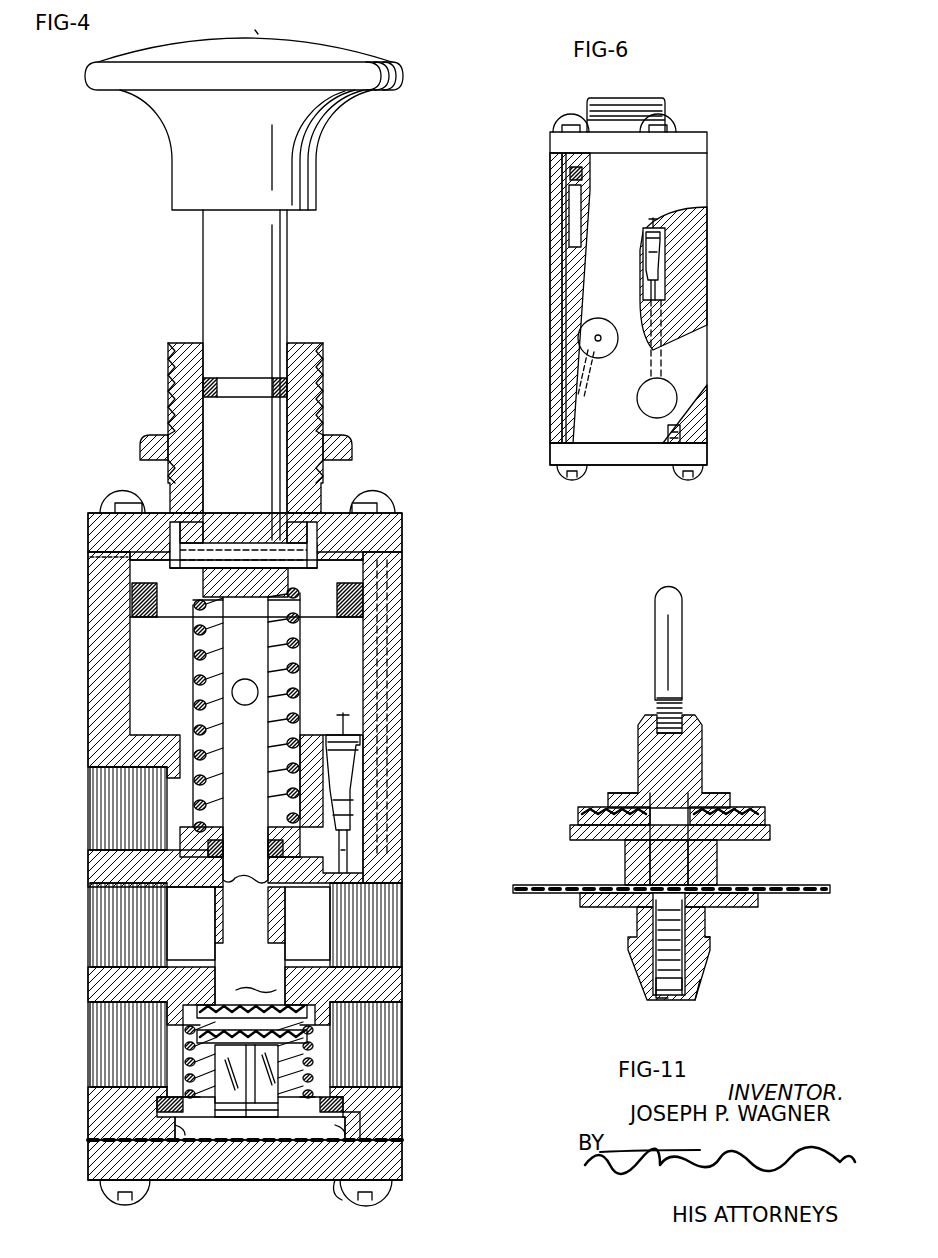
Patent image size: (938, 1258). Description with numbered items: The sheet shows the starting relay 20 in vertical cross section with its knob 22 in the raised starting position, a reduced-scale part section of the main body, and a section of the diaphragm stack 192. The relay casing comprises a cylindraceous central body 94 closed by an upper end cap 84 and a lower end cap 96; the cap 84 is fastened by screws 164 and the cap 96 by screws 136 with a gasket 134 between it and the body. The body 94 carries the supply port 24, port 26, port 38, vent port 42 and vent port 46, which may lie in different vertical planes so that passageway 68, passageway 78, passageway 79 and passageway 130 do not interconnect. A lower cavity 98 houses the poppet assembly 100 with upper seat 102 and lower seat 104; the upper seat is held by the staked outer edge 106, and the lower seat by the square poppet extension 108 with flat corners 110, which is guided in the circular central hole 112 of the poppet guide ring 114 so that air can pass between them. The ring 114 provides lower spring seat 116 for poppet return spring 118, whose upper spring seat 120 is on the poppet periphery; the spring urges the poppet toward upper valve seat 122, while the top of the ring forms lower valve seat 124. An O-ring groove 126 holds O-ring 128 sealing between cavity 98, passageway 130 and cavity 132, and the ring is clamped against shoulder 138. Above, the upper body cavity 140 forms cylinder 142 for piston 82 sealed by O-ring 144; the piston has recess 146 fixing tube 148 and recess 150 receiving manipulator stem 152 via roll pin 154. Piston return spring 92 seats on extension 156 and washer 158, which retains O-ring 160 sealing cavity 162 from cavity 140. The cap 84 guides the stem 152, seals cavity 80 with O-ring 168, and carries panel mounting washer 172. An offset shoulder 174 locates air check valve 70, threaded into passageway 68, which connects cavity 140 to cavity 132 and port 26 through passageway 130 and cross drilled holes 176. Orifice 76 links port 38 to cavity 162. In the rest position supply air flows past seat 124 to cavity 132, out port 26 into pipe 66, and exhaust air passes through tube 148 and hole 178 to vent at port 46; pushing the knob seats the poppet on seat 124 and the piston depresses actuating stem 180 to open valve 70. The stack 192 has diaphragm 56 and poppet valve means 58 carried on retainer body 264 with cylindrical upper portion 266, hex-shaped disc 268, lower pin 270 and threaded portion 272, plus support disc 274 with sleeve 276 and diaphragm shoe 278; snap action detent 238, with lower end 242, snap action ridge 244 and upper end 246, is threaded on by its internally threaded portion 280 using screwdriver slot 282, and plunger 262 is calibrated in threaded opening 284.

In FIG. 4, the relay 20 is at (80, 379).
In FIG. 6, the relay 20 is at (743, 210).
In FIG. 4, the knob 22 is at (318, 178).
In FIG. 4, the supply port 24 is at (100, 1062).
In FIG. 4, the port 26 is at (380, 1050).
In FIG. 6, the port 26 is at (668, 388).
In FIG. 4, the port 38 is at (365, 925).
In FIG. 6, the port 38 is at (590, 325).
In FIG. 4, the vent port 42 is at (100, 928).
In FIG. 4, the vent port 46 is at (100, 795).
In FIG. 11, the diaphragm 56 is at (782, 885).
In FIG. 11, the poppet valve means 58 is at (740, 807).
In FIG. 4, the pipe 66 is at (95, 557).
In FIG. 4, the passageway 68 is at (350, 875).
In FIG. 6, the passageway 68 is at (652, 325).
In FIG. 4, the air check valve 70 is at (345, 822).
In FIG. 6, the air check valve 70 is at (655, 290).
In FIG. 4, the orifice 76 is at (290, 915).
In FIG. 6, the orifice 76 is at (598, 335).
In FIG. 4, the passageway 78 is at (400, 960).
In FIG. 6, the passageway 78 is at (573, 392).
In FIG. 4, the passageway 79 is at (385, 786).
In FIG. 6, the passageway 79 is at (562, 345).
In FIG. 4, the cavity 80 is at (172, 533).
In FIG. 6, the cavity 80 is at (575, 160).
In FIG. 4, the piston 82 is at (340, 645).
In FIG. 4, the end cap 84 is at (370, 520).
In FIG. 4, the piston return spring 92 is at (300, 672).
In FIG. 4, the central body 94 is at (385, 600).
In FIG. 6, the central body 94 is at (700, 168).
In FIG. 4, the end cap 96 is at (395, 1160).
In FIG. 6, the end cap 96 is at (700, 458).
In FIG. 4, the lower cavity 98 is at (300, 998).
In FIG. 4, the poppet assembly 100 is at (305, 1021).
In FIG. 4, the upper seat 102 is at (250, 946).
In FIG. 4, the lower seat 104 is at (240, 1103).
In FIG. 4, the outer edge 106 is at (305, 1010).
In FIG. 4, the poppet extension 108 is at (210, 1140).
In FIG. 4, the flat corners 110 is at (250, 1117).
In FIG. 4, the central hole 112 is at (270, 1125).
In FIG. 4, the poppet guide ring 114 is at (190, 1135).
In FIG. 4, the lower spring seat 116 is at (185, 1118).
In FIG. 4, the poppet return spring 118 is at (195, 1080).
In FIG. 4, the upper spring seat 120 is at (190, 1015).
In FIG. 4, the upper valve seat 122 is at (207, 985).
In FIG. 4, the lower valve seat 124 is at (345, 1035).
In FIG. 4, the O-ring groove 126 is at (330, 1100).
In FIG. 4, the O-ring 128 is at (345, 1120).
In FIG. 6, the passageway 130 is at (690, 420).
In FIG. 4, the cavity 132 is at (342, 1200).
In FIG. 4, the gasket 134 is at (400, 1140).
In FIG. 4, the screws 136 is at (115, 1192).
In FIG. 6, the screws 136 is at (560, 472).
In FIG. 4, the shoulder 138 is at (190, 1100).
In FIG. 4, the upper body cavity 140 is at (350, 680).
In FIG. 6, the upper body cavity 140 is at (580, 205).
In FIG. 4, the cylinder 142 is at (130, 665).
In FIG. 4, the O-ring 144 is at (132, 600).
In FIG. 6, the O-ring 144 is at (572, 174).
In FIG. 4, the recess 146 is at (200, 650).
In FIG. 4, the tube 148 is at (232, 690).
In FIG. 4, the recess 150 is at (292, 583).
In FIG. 4, the manipulator stem 152 is at (272, 495).
In FIG. 4, the roll pin 154 is at (318, 553).
In FIG. 4, the extension 156 is at (225, 672).
In FIG. 4, the washer 158 is at (190, 832).
In FIG. 4, the O-ring 160 is at (210, 848).
In FIG. 4, the cavity 162 is at (257, 978).
In FIG. 4, the screws 164 is at (115, 503).
In FIG. 6, the screws 164 is at (565, 125).
In FIG. 4, the O-ring 168 is at (290, 388).
In FIG. 4, the panel mounting washer 172 is at (325, 447).
In FIG. 4, the offset shoulder 174 is at (318, 735).
In FIG. 4, the cross drilled holes 176 is at (185, 1135).
In FIG. 4, the cross drilled hole 178 is at (240, 698).
In FIG. 4, the actuating stem 180 is at (352, 715).
In FIG. 6, the actuating stem 180 is at (660, 232).
In FIG. 11, the diaphragm stack 192 is at (791, 811).
In FIG. 11, the snap action detent 238 is at (645, 955).
In FIG. 11, the lower end 242 is at (702, 975).
In FIG. 11, the snap action ridge 244 is at (710, 945).
In FIG. 11, the upper end 246 is at (640, 935).
In FIG. 11, the plunger 262 is at (674, 652).
In FIG. 11, the poppet retainer body 264 is at (730, 747).
In FIG. 11, the cylindrical upper portion 266 is at (642, 752).
In FIG. 11, the hex-shaped disc 268 is at (616, 805).
In FIG. 11, the lower pin 270 is at (680, 862).
In FIG. 11, the threaded portion 272 is at (578, 818).
In FIG. 11, the disc 274 is at (575, 834).
In FIG. 11, the sleeve 276 is at (630, 860).
In FIG. 11, the diaphragm shoe 278 is at (585, 900).
In FIG. 11, the internally threaded portion 280 is at (688, 988).
In FIG. 11, the screwdriver slot 282 is at (665, 1000).
In FIG. 11, the threaded opening 284 is at (680, 728).